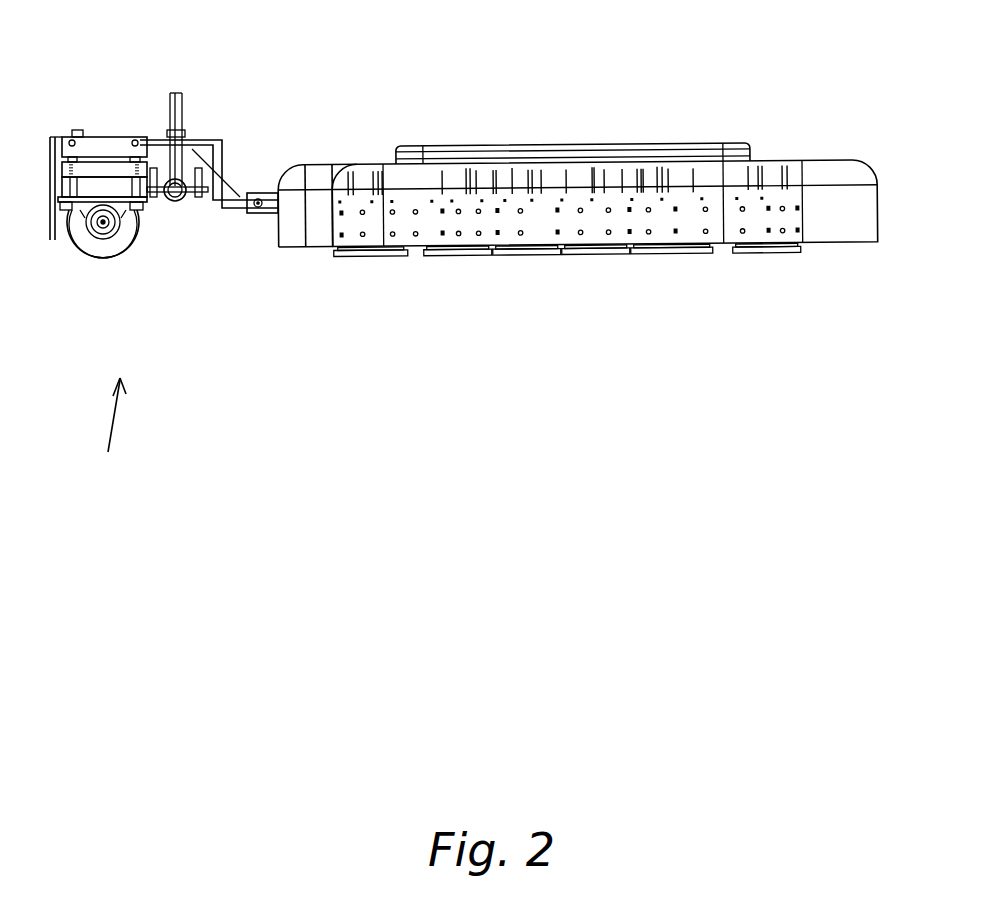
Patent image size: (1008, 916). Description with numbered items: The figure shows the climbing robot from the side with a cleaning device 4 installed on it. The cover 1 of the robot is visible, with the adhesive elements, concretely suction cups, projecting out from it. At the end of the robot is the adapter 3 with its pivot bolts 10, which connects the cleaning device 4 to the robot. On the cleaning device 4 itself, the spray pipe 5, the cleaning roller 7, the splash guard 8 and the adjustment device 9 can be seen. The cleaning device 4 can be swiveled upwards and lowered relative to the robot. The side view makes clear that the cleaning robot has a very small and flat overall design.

The cover 1 is at (783, 168).
The adapter 3 is at (273, 240).
The cleaning device 4 is at (120, 516).
The spray pipe 5 is at (177, 200).
The cleaning roller 7 is at (110, 238).
The splash guard 8 is at (47, 137).
The adjustment device 9 is at (178, 117).
The pivot bolts 10 is at (262, 191).